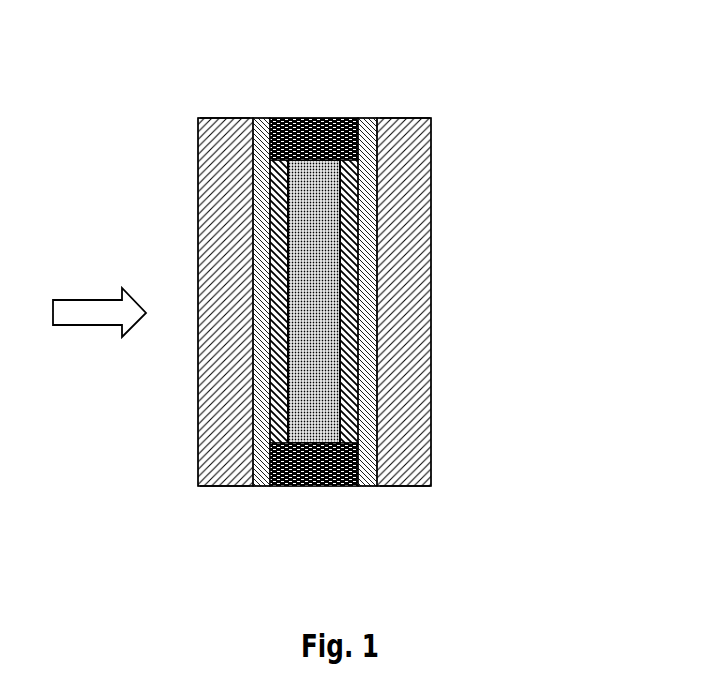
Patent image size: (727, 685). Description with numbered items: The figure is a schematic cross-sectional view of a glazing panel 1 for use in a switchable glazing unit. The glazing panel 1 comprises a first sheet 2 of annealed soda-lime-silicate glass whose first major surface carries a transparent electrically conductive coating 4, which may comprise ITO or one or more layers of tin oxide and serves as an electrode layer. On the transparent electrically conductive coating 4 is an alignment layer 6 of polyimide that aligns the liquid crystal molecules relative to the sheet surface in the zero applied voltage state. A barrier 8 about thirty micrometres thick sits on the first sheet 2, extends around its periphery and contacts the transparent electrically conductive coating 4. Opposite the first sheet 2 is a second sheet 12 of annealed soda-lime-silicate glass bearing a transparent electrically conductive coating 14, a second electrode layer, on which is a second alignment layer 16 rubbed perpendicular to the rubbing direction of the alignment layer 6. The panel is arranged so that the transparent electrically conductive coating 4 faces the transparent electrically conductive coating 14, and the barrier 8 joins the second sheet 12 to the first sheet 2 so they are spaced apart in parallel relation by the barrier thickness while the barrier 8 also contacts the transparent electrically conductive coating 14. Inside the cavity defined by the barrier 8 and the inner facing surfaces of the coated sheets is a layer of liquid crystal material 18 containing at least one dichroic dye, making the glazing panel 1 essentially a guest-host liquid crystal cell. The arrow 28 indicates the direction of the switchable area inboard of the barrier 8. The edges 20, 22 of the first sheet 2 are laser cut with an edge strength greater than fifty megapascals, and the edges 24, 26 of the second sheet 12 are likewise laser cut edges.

The glazing panel 1 is at (483, 420).
The first sheet 2 is at (227, 205).
The transparent electrically conductive coating 4 is at (258, 480).
The alignment layer 6 is at (275, 405).
The barrier 8 is at (313, 120).
The second sheet 12 is at (410, 205).
The transparent electrically conductive coating 14 is at (368, 485).
The second alignment layer 16 is at (352, 359).
The liquid crystal material 18 is at (323, 185).
The edge 20 is at (226, 502).
The edge 22 is at (222, 103).
The edge 24 is at (398, 103).
The edge 26 is at (399, 502).
The arrow 28 is at (82, 308).